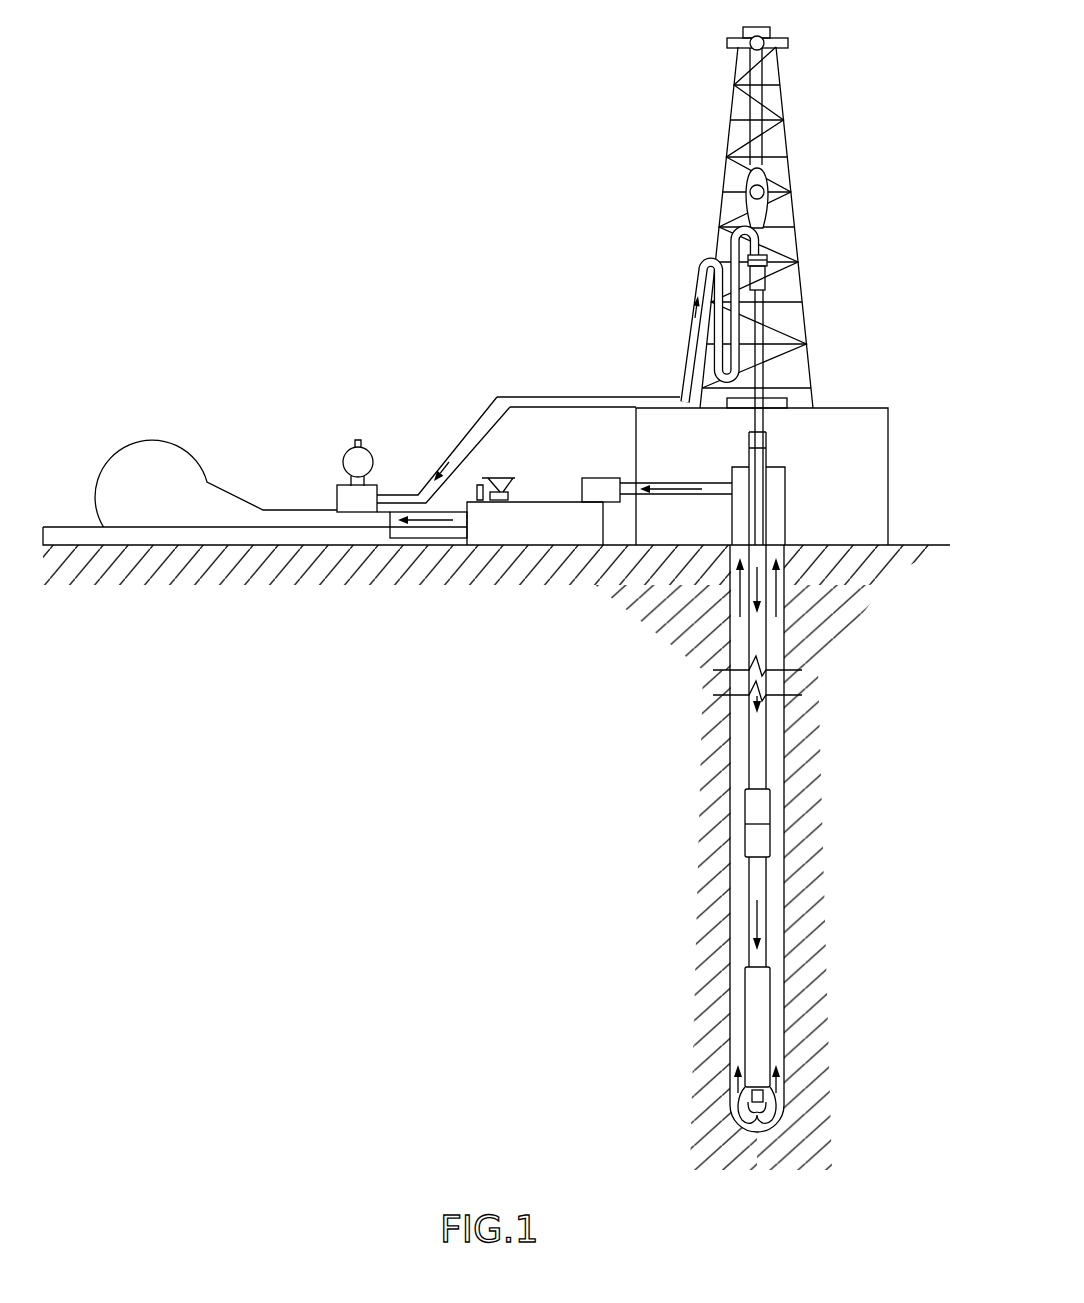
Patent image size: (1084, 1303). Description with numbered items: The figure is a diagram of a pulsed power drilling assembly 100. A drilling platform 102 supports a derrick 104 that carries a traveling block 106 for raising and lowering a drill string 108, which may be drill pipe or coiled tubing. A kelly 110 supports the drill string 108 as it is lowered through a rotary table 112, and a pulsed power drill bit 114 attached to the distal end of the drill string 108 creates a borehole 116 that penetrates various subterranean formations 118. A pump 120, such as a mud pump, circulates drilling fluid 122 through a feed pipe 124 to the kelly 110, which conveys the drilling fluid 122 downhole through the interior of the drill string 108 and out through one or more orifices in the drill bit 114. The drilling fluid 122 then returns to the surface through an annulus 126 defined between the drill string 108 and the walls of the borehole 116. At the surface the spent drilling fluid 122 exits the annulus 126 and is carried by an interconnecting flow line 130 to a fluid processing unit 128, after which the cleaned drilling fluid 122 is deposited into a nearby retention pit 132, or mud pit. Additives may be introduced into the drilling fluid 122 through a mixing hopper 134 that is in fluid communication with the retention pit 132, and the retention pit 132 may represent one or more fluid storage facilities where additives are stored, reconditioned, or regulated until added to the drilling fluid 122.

The drilling assembly 100 is at (462, 113).
The drilling platform 102 is at (889, 412).
The derrick 104 is at (786, 135).
The traveling block 106 is at (770, 182).
The drill string 108 is at (760, 650).
The kelly 110 is at (757, 315).
The rotary table 112 is at (785, 403).
The pulsed power drill bit 114 is at (782, 1102).
The borehole 116 is at (787, 748).
The subterranean formations 118 is at (656, 801).
The pump 120 is at (177, 503).
The drilling fluid 122 is at (398, 495).
The feed pipe 124 is at (522, 396).
The annulus 126 is at (775, 917).
The fluid processing unit 128 is at (596, 478).
The interconnecting flow line 130 is at (712, 492).
The retention pit 132 is at (572, 547).
The mixing hopper 134 is at (485, 498).